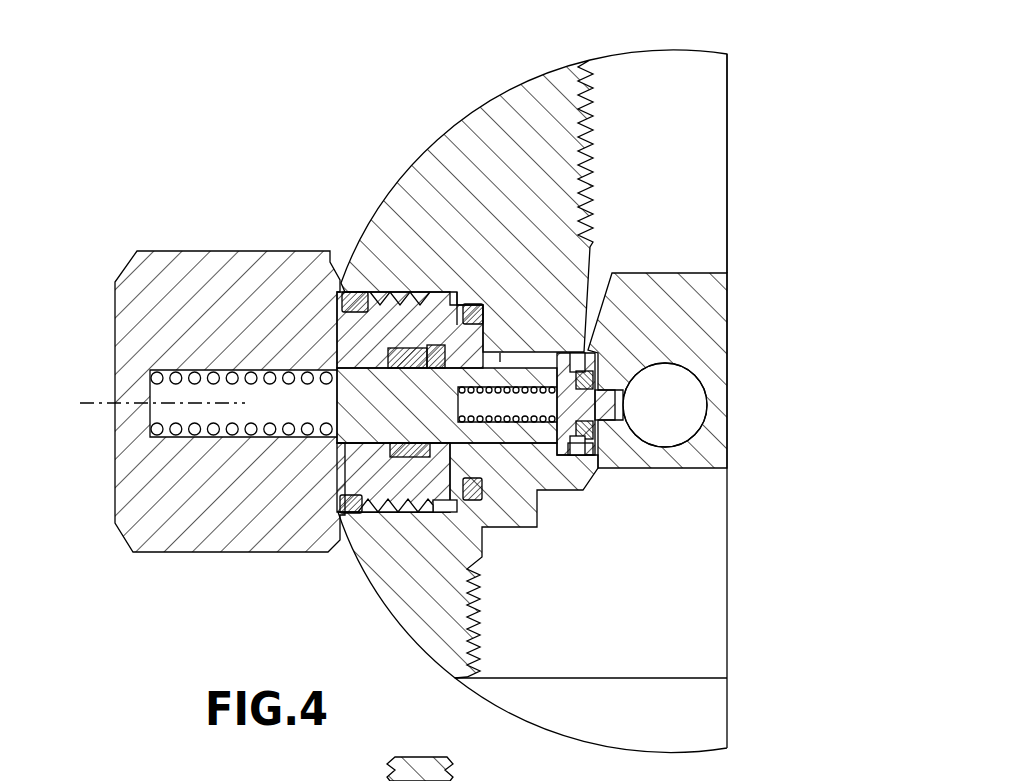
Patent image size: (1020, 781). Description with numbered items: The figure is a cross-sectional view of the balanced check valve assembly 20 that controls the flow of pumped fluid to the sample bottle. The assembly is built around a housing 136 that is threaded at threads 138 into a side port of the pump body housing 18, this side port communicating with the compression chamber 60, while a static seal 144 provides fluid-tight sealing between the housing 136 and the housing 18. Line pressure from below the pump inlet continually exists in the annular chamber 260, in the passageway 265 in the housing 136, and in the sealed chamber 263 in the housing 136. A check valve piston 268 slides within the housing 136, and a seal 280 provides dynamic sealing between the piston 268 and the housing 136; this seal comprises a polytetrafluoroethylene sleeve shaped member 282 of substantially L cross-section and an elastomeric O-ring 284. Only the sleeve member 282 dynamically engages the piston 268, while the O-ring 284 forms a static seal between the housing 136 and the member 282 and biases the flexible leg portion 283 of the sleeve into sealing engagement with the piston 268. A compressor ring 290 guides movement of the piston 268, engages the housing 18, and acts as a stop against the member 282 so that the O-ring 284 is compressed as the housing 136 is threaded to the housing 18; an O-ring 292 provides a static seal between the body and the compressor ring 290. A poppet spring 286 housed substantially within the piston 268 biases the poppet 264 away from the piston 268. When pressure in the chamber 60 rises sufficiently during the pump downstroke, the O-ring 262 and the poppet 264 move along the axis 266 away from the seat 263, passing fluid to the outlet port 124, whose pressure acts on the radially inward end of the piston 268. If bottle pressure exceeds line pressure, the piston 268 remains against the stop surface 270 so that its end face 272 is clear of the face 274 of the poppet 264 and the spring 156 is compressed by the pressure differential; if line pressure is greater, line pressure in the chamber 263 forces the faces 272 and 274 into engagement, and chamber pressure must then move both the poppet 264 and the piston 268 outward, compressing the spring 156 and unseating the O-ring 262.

The housing 18 is at (445, 648).
The balanced check valve assembly 20 is at (180, 585).
The compression chamber 60 is at (652, 416).
The outlet port 124 is at (668, 193).
The housing 136 is at (160, 258).
The threads 138 is at (393, 303).
The static seal 144 is at (355, 290).
The spring 156 is at (180, 437).
The annular chamber 260 is at (445, 297).
The O-ring 262 is at (590, 380).
The sealed chamber / seat 263 is at (268, 411).
The poppet 264 is at (547, 353).
The passageway 265 is at (333, 457).
The axis 266 is at (110, 408).
The check valve piston 268 is at (385, 413).
The stop surface 270 is at (347, 368).
The end face 272 is at (553, 425).
The face 274 is at (533, 437).
The seal 280 is at (398, 502).
The sleeve shaped member 282 is at (420, 470).
The flexible leg portion 283 is at (402, 443).
The O-ring 284 is at (395, 457).
The poppet spring 286 is at (526, 388).
The compressor ring 290 is at (458, 304).
The O-ring 292 is at (475, 497).